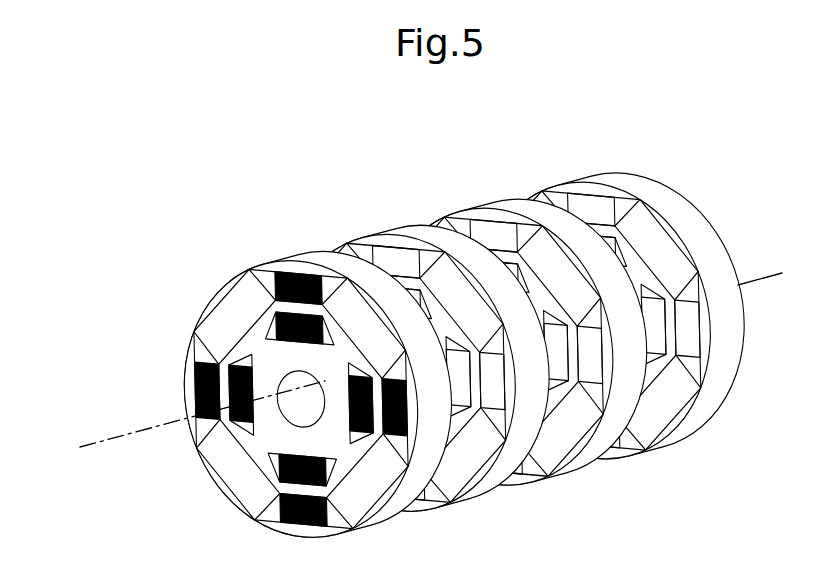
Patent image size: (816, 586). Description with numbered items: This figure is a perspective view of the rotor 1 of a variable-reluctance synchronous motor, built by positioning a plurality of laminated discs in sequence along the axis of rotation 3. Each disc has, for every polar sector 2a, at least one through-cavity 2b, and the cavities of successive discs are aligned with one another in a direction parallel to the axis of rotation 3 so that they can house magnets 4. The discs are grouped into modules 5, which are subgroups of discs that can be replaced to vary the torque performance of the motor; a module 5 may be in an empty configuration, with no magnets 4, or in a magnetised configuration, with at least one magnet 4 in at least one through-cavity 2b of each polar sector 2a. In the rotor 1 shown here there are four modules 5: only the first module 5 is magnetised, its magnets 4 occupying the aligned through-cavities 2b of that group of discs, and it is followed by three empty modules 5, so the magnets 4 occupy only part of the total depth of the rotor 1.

The rotor 1 is at (411, 338).
The polar sector 2a is at (232, 486).
The through-cavity 2b is at (452, 365).
The axis of rotation 3 is at (125, 432).
The magnet 4 is at (404, 411).
The module 5 is at (413, 233).